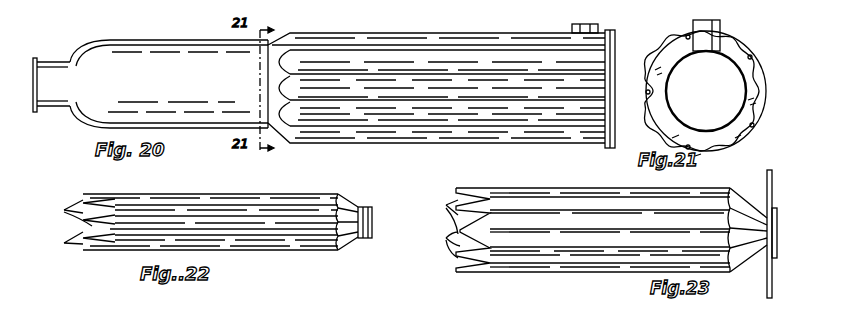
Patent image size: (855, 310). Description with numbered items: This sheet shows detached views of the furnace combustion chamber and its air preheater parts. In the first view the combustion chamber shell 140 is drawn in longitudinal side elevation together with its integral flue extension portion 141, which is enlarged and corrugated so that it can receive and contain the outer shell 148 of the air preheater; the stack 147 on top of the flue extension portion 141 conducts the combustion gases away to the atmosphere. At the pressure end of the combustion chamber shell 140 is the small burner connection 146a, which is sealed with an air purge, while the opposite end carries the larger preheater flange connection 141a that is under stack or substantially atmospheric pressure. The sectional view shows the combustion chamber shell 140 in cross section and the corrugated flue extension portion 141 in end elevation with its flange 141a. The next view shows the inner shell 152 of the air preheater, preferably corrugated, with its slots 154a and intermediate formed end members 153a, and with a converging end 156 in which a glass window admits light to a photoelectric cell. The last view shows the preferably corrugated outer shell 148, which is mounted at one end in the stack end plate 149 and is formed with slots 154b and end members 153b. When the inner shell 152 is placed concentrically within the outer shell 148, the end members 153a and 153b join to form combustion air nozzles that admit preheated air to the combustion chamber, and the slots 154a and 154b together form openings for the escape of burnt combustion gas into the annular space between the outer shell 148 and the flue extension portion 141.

In FIG. 20, the combustion chamber shell 140 is at (147, 46).
In FIG. 21, the combustion chamber shell 140 is at (670, 100).
In FIG. 20, the flue extension portion 141 is at (372, 33).
In FIG. 21, the flue extension portion 141 is at (758, 77).
In FIG. 20, the flange 141a is at (607, 146).
In FIG. 21, the flange 141a is at (750, 58).
In FIG. 20, the small burner connection 146a is at (40, 56).
In FIG. 20, the stack 147 is at (574, 27).
In FIG. 21, the stack 147 is at (721, 31).
In FIG. 23, the outer shell of the air preheater 148 is at (583, 193).
In FIG. 23, the stack end plate 149 is at (767, 186).
In FIG. 22, the inner shell of the air preheater 152 is at (246, 196).
In FIG. 22, the formed end members of the inner shell 153a is at (58, 213).
In FIG. 23, the end members of the outer shell 153b is at (432, 216).
In FIG. 22, the slots of the inner shell 154a is at (53, 240).
In FIG. 23, the slots of the outer shell 154b is at (431, 244).
In FIG. 22, the converging end of the inner shell 156 is at (352, 204).